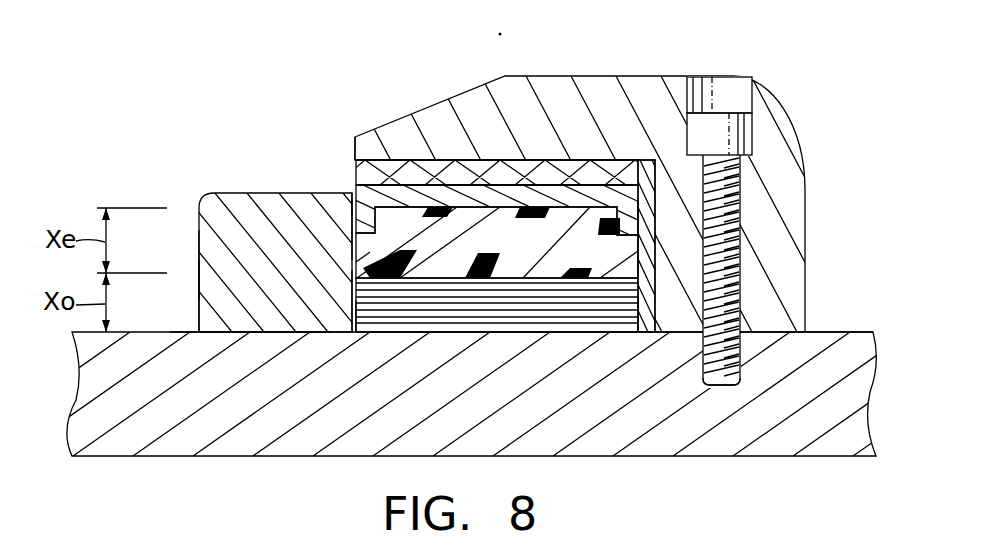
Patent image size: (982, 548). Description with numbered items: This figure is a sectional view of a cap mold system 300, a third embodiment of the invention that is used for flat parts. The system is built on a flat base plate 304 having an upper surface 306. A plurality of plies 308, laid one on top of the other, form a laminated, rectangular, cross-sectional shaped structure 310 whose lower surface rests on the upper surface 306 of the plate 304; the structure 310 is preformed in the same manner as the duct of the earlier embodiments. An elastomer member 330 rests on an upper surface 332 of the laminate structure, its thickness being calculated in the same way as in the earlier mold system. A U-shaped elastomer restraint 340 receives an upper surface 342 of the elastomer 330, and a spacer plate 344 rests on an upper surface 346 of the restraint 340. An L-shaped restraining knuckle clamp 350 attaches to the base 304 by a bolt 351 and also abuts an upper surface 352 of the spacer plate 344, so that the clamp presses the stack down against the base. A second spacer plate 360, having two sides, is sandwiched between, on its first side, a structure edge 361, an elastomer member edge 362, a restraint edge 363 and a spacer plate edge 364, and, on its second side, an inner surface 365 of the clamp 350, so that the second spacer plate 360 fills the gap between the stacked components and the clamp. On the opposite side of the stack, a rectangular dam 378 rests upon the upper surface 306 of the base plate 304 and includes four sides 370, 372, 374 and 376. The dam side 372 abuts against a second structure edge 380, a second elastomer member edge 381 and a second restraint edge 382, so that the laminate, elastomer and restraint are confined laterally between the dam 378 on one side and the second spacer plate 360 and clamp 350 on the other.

The cap mold system 300 is at (300, 59).
The flat base plate 304 is at (850, 394).
The upper surface 306 is at (820, 332).
The plies 308 is at (487, 314).
The laminated structure 310 is at (530, 333).
The elastomer member 330 is at (535, 249).
The upper surface of the laminate structure 332 is at (456, 268).
The U-shaped elastomer restraint 340 is at (507, 195).
The upper surface of the elastomer 342 is at (585, 195).
The spacer plate 344 is at (598, 200).
The upper surface of restraint 346 is at (355, 144).
The L-shaped restraining knuckle clamp 350 is at (773, 112).
The bolt 351 is at (722, 386).
The upper surface of spacer plate 352 is at (400, 182).
The second spacer plate 360 is at (720, 258).
The structure edge 361 is at (636, 331).
The elastomer member edge 362 is at (637, 247).
The restraint edge 363 is at (718, 198).
The spacer plate edge 364 is at (641, 185).
The inner surface of clamp 365 is at (645, 333).
The dam side 370 is at (258, 192).
The dam side 372 is at (355, 246).
The dam side 374 is at (262, 333).
The dam side 376 is at (199, 278).
The rectangular dam 378 is at (290, 282).
The second structure edge 380 is at (350, 335).
The second elastomer member edge 381 is at (356, 272).
The second restraint edge 382 is at (342, 188).